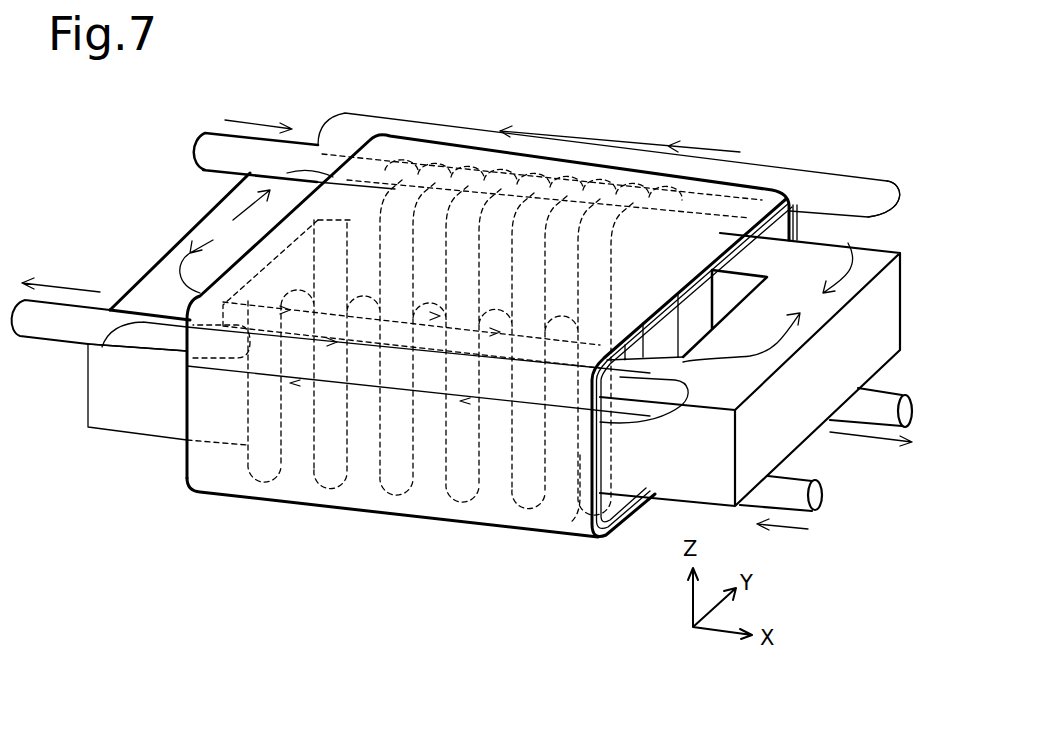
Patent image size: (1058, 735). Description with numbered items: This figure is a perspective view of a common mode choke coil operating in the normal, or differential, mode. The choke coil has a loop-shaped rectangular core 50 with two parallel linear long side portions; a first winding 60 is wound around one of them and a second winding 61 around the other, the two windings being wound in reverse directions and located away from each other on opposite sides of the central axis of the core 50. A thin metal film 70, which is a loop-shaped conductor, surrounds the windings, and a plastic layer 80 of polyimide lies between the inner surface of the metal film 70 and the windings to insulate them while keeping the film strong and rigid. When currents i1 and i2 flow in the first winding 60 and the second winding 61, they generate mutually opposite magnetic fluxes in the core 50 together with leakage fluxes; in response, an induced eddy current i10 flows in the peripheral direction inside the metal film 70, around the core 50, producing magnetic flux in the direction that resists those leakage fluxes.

The core 50 is at (907, 302).
The first winding 60 is at (743, 195).
The second winding 61 is at (527, 513).
The metal film 70 is at (682, 168).
The plastic layer 80 is at (735, 245).
The induced current i10 is at (390, 522).
The current i1 is at (568, 283).
The current i2 is at (417, 398).